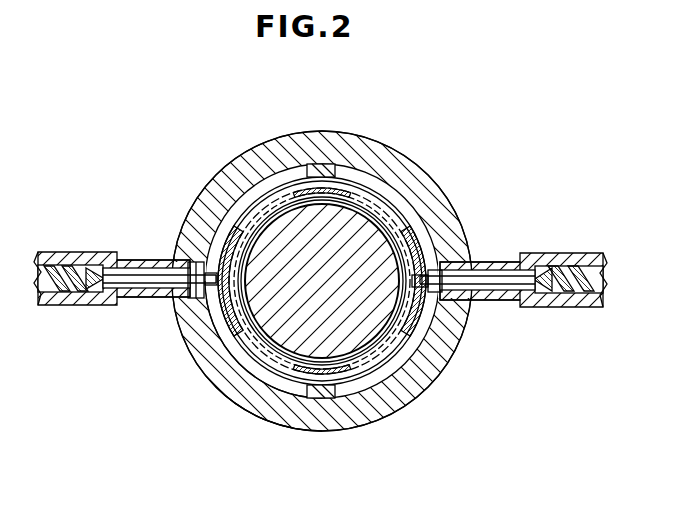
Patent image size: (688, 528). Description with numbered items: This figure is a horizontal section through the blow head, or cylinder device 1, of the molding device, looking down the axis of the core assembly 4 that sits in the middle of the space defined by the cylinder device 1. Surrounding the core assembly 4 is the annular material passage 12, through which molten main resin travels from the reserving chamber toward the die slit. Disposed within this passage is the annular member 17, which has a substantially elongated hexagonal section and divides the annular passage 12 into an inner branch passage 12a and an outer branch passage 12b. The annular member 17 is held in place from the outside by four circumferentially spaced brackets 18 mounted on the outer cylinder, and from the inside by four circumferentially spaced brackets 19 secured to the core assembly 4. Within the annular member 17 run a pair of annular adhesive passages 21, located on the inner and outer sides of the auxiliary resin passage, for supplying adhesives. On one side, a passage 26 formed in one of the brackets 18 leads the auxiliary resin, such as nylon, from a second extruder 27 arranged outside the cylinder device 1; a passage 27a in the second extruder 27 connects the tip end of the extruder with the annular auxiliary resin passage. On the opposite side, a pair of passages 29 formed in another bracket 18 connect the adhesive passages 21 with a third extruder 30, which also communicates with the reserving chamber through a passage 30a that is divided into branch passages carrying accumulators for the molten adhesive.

The cylinder device 1 is at (267, 142).
The core assembly 4 is at (335, 300).
The annular material passage 12 is at (372, 390).
The inner branch passage 12a is at (232, 363).
The outer branch passage 12b is at (278, 389).
The annular member 17 is at (226, 339).
The brackets 18 is at (327, 163).
The brackets 19 is at (242, 210).
The annular adhesive passages 21 is at (423, 252).
The passage 26 is at (200, 278).
The second extruder 27 is at (88, 253).
The passage 27a is at (148, 292).
The passages 29 is at (455, 302).
The third extruder 30 is at (576, 255).
The passage 30a is at (508, 265).